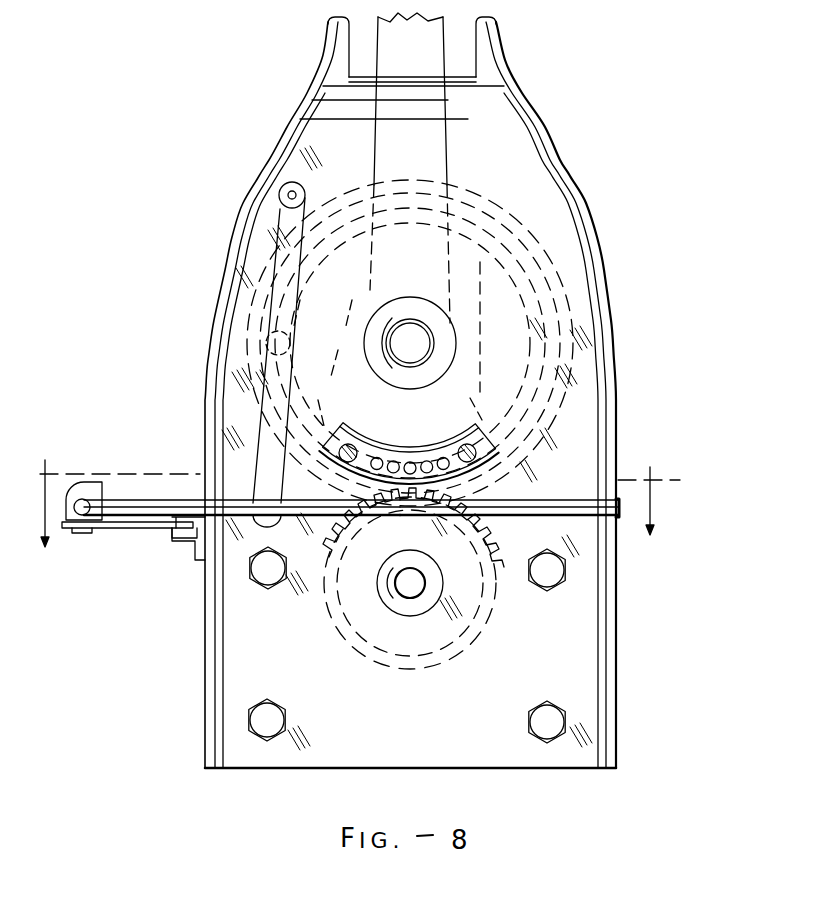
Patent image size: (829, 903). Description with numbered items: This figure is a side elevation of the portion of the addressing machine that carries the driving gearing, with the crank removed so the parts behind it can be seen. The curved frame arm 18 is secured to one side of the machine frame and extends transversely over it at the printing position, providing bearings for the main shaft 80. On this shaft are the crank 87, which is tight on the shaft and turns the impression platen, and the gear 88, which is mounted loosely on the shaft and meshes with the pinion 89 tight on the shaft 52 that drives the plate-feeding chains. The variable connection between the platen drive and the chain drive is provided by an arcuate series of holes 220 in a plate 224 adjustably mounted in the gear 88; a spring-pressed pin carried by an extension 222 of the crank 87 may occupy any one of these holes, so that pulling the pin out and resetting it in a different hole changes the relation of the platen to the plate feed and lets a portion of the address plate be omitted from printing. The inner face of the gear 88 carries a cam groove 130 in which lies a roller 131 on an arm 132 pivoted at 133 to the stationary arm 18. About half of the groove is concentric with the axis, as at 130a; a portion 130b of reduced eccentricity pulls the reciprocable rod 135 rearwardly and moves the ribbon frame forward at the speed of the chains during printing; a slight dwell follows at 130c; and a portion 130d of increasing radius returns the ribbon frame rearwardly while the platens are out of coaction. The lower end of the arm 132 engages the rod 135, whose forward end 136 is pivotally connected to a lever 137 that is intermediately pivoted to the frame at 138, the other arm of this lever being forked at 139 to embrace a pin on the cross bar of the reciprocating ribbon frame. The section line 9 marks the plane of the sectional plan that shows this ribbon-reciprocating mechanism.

The curved frame arm 18 is at (410, 392).
The crank 87 is at (446, 135).
The gear 88 is at (570, 318).
The pivot 133 is at (306, 191).
The cam groove 130 is at (477, 240).
The concentric portion of cam groove 130a is at (317, 257).
The portion of reduced eccentricity 130b is at (503, 404).
The dwell portion of cam groove 130c is at (508, 345).
The portion of increasing radius 130d is at (492, 288).
The main shaft 80 is at (410, 331).
The roller 131 is at (294, 339).
The arm 132 is at (264, 438).
The extension of crank 222 is at (376, 392).
The arcuate series of holes 220 is at (373, 452).
The plate 224 is at (416, 458).
The pinion 89 is at (371, 525).
The shaft 52 is at (417, 582).
The reciprocable rod 135 is at (533, 512).
The lever pivot 138 is at (180, 506).
The forked arm of lever 139 is at (83, 490).
The forward end of rod 136 is at (93, 530).
The lever 137 is at (157, 530).
The section line 9— 9 is at (359, 517).